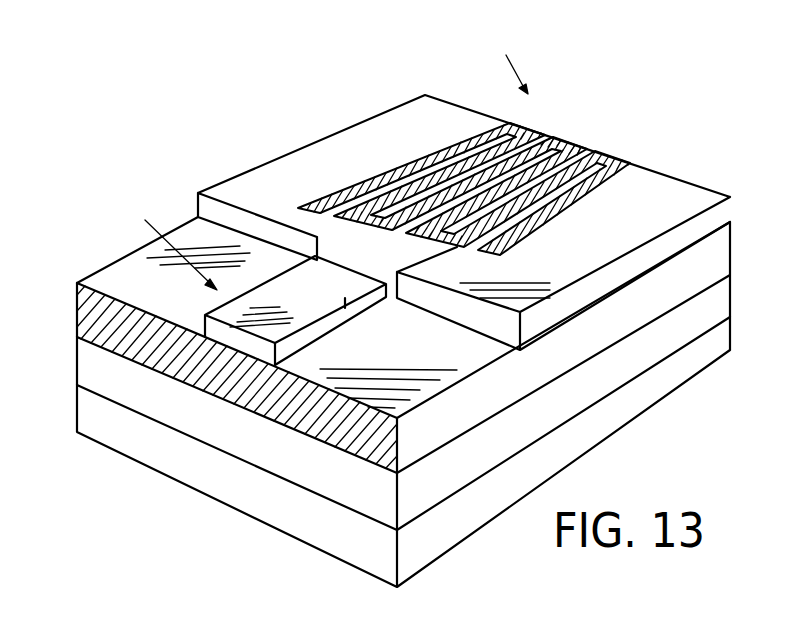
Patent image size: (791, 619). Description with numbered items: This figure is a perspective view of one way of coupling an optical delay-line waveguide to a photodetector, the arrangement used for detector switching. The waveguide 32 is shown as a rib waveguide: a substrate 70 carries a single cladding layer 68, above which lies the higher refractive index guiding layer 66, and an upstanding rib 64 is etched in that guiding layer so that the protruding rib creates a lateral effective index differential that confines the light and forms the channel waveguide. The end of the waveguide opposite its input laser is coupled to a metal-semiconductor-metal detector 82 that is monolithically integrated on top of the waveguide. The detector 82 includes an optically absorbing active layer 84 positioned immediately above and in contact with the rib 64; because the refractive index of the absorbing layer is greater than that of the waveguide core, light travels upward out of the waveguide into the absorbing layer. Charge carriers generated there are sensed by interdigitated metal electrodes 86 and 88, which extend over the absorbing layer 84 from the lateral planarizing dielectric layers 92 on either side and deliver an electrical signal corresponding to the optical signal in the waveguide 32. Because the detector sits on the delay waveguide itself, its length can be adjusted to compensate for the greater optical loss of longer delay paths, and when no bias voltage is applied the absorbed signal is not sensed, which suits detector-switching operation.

The waveguide 32 is at (165, 245).
The rib 64 is at (200, 337).
The guiding layer 66 is at (100, 326).
The cladding layer 68 is at (77, 369).
The substrate 70 is at (77, 413).
The metal-semiconductor-metal detector 82 is at (510, 60).
The optically absorbing active layer 84 is at (350, 240).
The interdigitated metal electrode 86 is at (393, 175).
The interdigitated metal electrode 88 is at (573, 145).
The lateral planarizing dielectric layer 92 is at (287, 180).